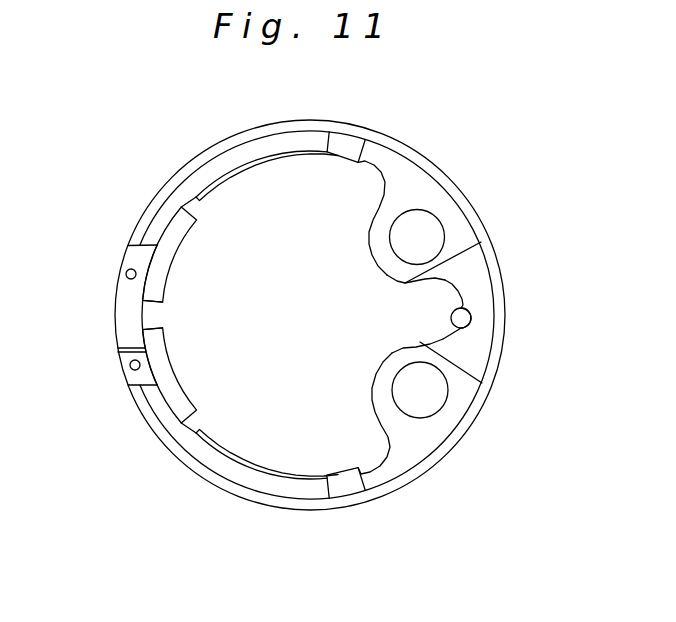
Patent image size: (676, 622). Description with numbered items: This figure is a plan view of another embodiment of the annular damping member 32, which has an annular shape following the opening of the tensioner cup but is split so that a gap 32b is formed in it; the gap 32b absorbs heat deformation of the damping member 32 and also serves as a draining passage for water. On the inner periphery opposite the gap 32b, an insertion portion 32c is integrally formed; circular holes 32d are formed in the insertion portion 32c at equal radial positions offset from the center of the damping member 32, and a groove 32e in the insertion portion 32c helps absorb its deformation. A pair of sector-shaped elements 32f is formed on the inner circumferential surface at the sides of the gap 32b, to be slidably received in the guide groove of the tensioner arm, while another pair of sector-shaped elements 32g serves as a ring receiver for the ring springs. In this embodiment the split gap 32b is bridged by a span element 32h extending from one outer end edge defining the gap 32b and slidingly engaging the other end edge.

The damping member 32 is at (415, 144).
The gap 32b is at (145, 317).
The insertion portion 32c is at (402, 283).
The circular holes 32d is at (427, 212).
The groove 32e is at (463, 305).
The sector-shaped elements 32f is at (167, 256).
The sector-shaped elements 32g is at (272, 162).
The span element 32h is at (119, 316).